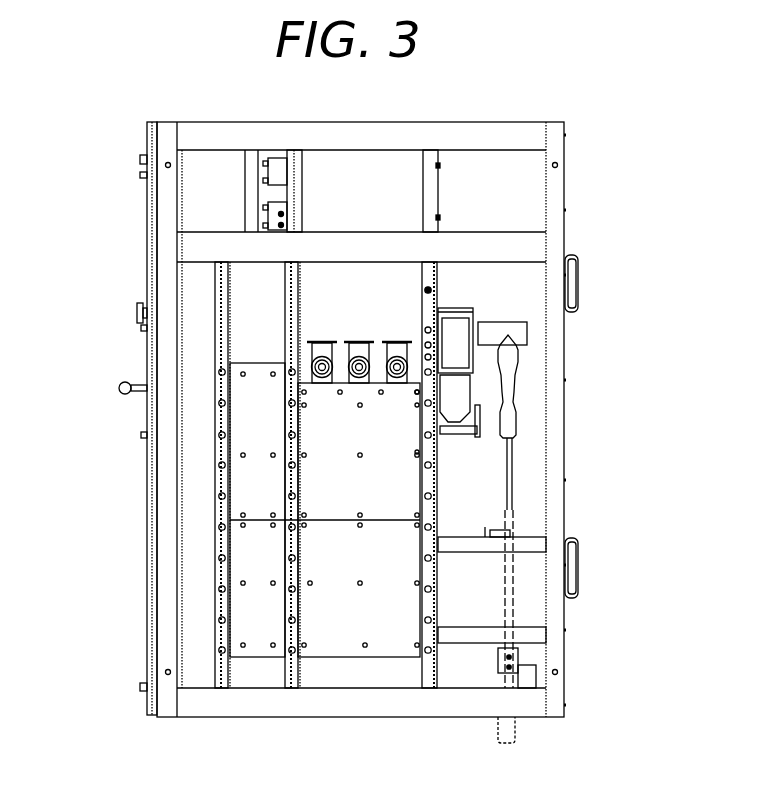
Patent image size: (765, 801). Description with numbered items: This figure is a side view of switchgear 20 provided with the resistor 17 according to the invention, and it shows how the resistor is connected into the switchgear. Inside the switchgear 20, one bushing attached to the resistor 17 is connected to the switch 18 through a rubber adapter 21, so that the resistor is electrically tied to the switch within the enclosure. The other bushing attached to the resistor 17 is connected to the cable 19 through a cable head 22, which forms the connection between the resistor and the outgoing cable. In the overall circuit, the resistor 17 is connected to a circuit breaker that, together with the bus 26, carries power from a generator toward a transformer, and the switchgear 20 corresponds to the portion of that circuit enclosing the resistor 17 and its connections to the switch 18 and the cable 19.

The resistor 17 is at (458, 323).
The switch 18 is at (393, 412).
The cable 19 is at (507, 510).
The switchgear 20 is at (168, 262).
The rubber adapter 21 is at (477, 408).
The cable head 22 is at (520, 332).
The bus 26 is at (312, 363).